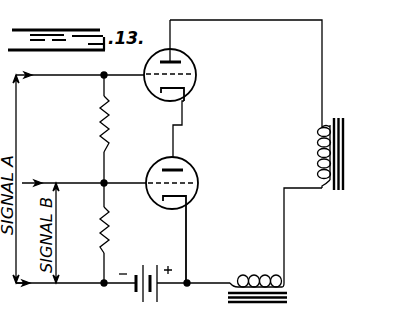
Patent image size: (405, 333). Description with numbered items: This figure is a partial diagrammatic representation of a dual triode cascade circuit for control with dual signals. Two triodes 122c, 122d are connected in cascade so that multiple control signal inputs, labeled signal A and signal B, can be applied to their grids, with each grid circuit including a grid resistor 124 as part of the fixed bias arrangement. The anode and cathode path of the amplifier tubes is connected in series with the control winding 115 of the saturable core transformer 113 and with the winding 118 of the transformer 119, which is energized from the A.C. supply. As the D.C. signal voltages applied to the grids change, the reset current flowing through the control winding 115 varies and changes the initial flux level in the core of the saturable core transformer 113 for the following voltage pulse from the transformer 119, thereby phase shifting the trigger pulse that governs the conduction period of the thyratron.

The triode 122c is at (196, 70).
The triode 122d is at (198, 176).
The grid resistor 124 is at (107, 230).
The control winding 115 is at (318, 134).
The saturable core transformer 113 is at (345, 129).
The winding 118 is at (247, 280).
The transformer 119 is at (277, 304).